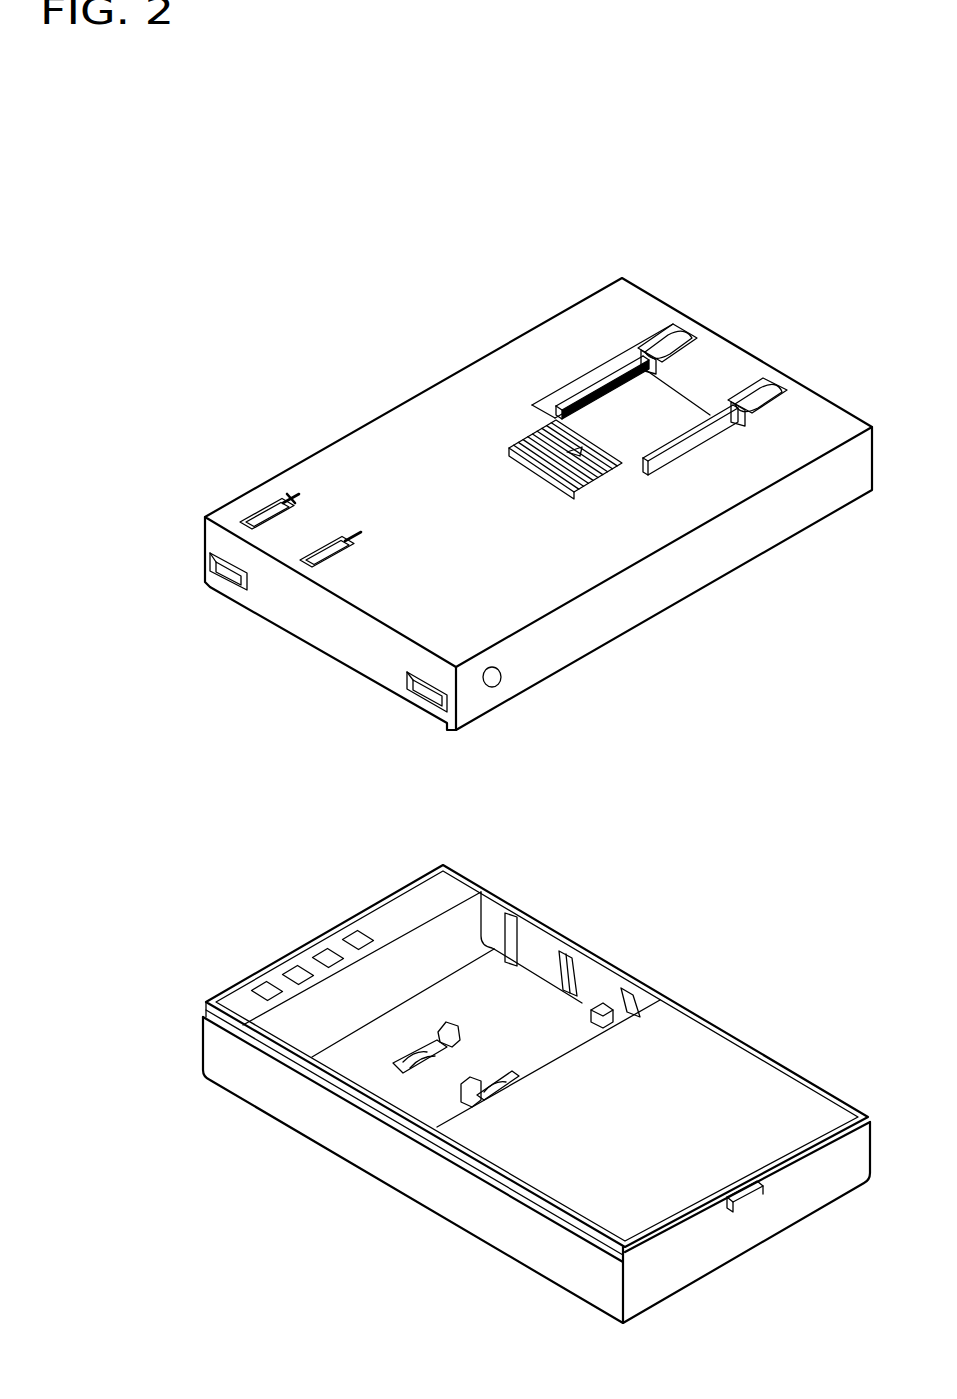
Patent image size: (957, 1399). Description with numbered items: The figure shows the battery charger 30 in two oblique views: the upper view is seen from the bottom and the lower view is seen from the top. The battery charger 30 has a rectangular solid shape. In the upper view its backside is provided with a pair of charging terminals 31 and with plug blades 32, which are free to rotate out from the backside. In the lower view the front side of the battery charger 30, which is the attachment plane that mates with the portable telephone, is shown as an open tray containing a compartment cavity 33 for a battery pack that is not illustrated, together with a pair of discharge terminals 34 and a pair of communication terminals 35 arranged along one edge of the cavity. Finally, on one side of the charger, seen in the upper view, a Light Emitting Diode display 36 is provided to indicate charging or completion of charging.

The battery charger 30 is at (457, 370).
The charging terminals 31 is at (268, 533).
The plug blades 32 is at (603, 377).
The battery pack compartment cavity 33 is at (375, 1080).
The discharge terminals 34 is at (289, 962).
The communication terminals 35 is at (352, 927).
The Light Emitting Diode (LED) display 36 is at (503, 677).